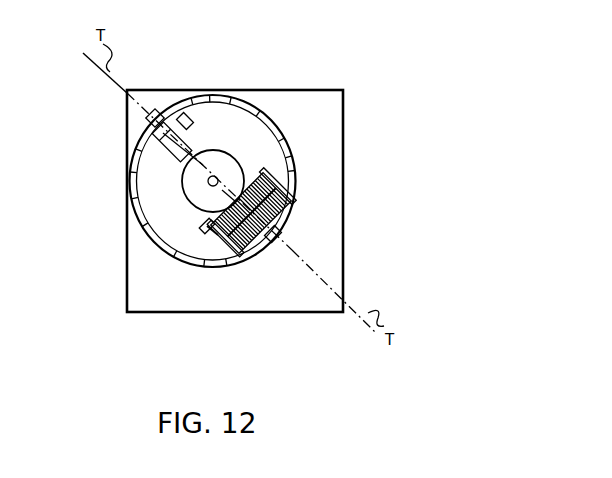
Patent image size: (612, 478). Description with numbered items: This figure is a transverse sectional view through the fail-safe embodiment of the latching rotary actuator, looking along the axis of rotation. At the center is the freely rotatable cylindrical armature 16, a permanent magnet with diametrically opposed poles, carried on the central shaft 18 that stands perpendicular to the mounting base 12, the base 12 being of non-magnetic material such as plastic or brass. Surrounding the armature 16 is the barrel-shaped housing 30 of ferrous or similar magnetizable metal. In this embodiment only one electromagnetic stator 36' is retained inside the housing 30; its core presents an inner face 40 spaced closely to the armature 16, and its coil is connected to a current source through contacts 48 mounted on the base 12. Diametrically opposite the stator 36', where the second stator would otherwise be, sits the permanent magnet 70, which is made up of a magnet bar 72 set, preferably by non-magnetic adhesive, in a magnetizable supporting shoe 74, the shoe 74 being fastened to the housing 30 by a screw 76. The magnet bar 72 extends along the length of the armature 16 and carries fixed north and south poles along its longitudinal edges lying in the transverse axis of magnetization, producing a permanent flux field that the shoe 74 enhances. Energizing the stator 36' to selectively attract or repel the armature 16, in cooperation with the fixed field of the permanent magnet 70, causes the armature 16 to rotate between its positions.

The mounting base 12 is at (345, 122).
The cylindrical armature 16 is at (232, 166).
The central shaft 18 is at (213, 176).
The barrel-shaped housing 30 is at (298, 180).
The electromagnetic stator 36' is at (345, 212).
The inner face 40 is at (262, 187).
The contacts 48 is at (205, 236).
The permanent magnet 70 is at (181, 118).
The magnet bar 72 is at (182, 156).
The supporting shoe 74 is at (157, 148).
The screw 76 is at (149, 114).